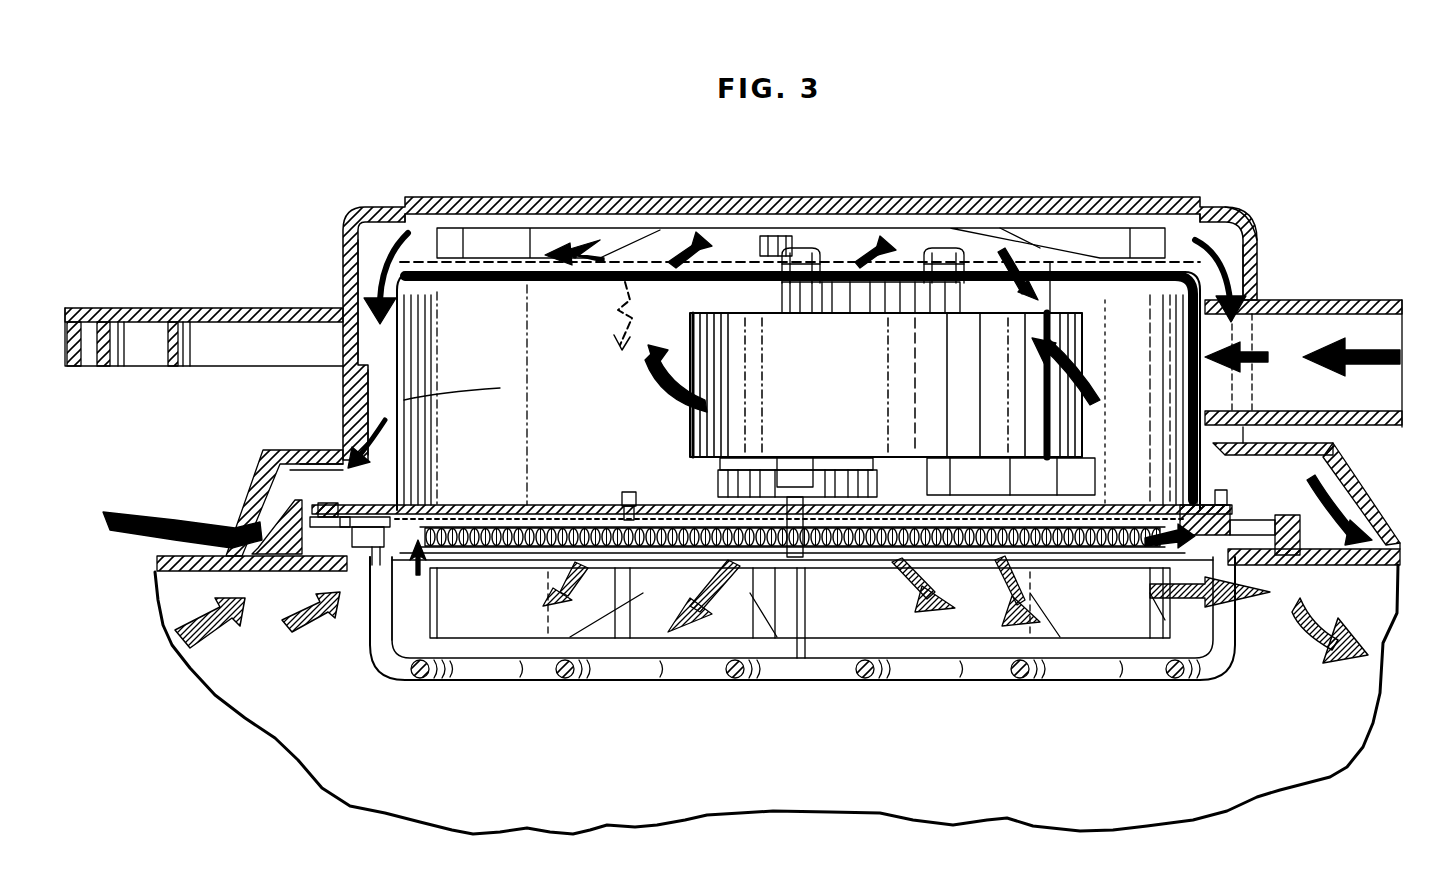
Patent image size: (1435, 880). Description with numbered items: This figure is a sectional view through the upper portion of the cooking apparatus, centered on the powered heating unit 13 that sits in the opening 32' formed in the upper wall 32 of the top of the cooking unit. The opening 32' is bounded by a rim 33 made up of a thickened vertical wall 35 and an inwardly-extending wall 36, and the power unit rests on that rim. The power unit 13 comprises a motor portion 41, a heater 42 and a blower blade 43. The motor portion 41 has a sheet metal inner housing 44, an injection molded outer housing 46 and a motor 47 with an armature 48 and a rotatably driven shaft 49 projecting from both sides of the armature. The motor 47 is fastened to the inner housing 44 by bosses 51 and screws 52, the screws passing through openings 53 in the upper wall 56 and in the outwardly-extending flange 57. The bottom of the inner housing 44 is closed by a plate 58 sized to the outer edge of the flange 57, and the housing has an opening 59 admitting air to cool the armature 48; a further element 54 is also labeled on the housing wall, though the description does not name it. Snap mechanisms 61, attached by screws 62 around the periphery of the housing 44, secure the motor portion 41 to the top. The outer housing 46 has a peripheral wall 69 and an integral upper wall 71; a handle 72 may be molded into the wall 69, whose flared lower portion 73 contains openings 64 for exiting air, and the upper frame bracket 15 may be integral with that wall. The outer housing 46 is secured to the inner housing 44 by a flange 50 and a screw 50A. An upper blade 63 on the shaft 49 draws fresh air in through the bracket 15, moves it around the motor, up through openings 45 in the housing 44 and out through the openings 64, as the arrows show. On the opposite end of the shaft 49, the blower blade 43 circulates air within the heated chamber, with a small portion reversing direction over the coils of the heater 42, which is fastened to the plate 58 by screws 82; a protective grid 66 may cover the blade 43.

The powered heating unit 13 is at (1052, 195).
The upper frame bracket 15 is at (1335, 320).
The upper wall 32 is at (326, 501).
The opening 32' is at (257, 620).
The rim 33 is at (270, 452).
The thickened vertical wall 35 is at (290, 572).
The inwardly-extending wall 36 is at (302, 510).
The motor portion 41 is at (340, 389).
The heater 42 is at (384, 572).
The blower blade 43 is at (395, 652).
The inner housing 44 is at (410, 392).
The openings 45 is at (614, 288).
The outer housing 46 is at (343, 249).
The motor 47 is at (680, 448).
The armature 48 is at (1078, 455).
The shaft 49 is at (808, 250).
The flange 50 is at (1170, 478).
The screw 50A is at (1306, 488).
The bosses 51 is at (955, 282).
The screws 52 is at (805, 250).
The openings 53 is at (845, 268).
The filter layer 54 is at (418, 412).
The upper wall 56 is at (548, 290).
The outwardly-extending flange 57 is at (368, 502).
The plate 58 is at (478, 505).
The opening 59 is at (1200, 392).
The snap mechanism 61 is at (352, 560).
The screws 62 is at (365, 578).
The upper blade 63 is at (540, 236).
The openings 64 is at (220, 540).
The protective grid 66 is at (1095, 664).
The peripheral wall 69 is at (1256, 250).
The upper wall 71 is at (1225, 200).
The handle 72 is at (86, 316).
The lower portion 73 is at (310, 450).
The screws 82 is at (629, 492).